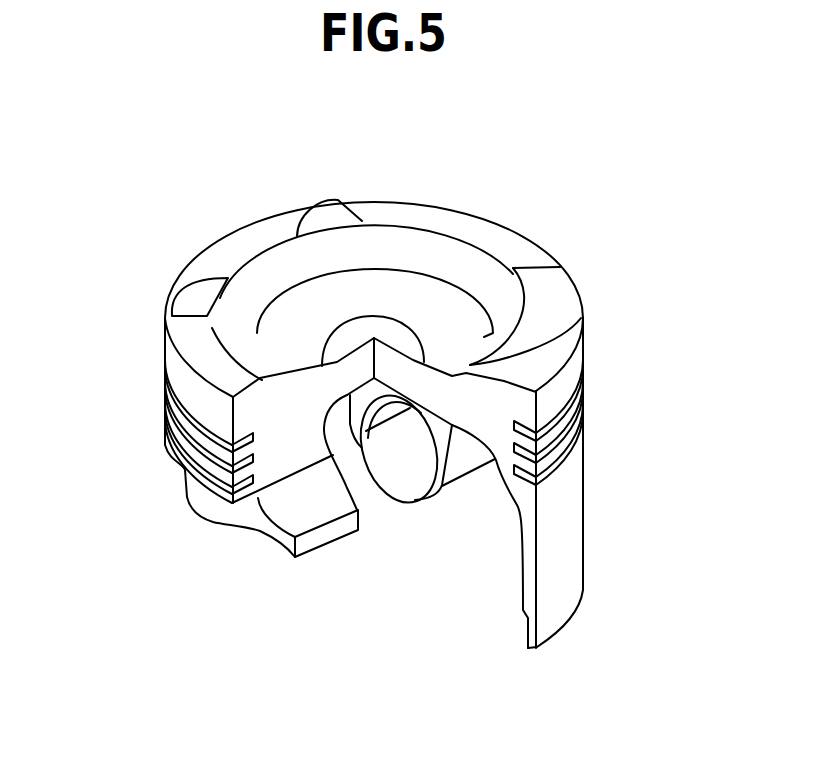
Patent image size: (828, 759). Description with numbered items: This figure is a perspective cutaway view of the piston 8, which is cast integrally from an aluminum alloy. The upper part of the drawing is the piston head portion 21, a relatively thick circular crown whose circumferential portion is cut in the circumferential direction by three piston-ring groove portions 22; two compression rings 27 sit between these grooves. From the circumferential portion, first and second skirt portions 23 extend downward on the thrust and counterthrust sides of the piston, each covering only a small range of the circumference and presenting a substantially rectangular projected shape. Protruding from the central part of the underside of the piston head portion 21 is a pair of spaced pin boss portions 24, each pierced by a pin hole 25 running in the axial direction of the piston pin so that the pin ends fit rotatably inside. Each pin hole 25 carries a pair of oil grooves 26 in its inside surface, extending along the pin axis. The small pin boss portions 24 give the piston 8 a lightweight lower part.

The piston 8 is at (563, 237).
The piston head portion 21 is at (268, 418).
The piston-ring groove portions 22 is at (213, 441).
The skirt portions 23 is at (563, 527).
The pin boss portions 24 is at (258, 520).
The pin hole 25 is at (325, 517).
The oil grooves 26 is at (390, 412).
The compression rings 27 is at (543, 440).